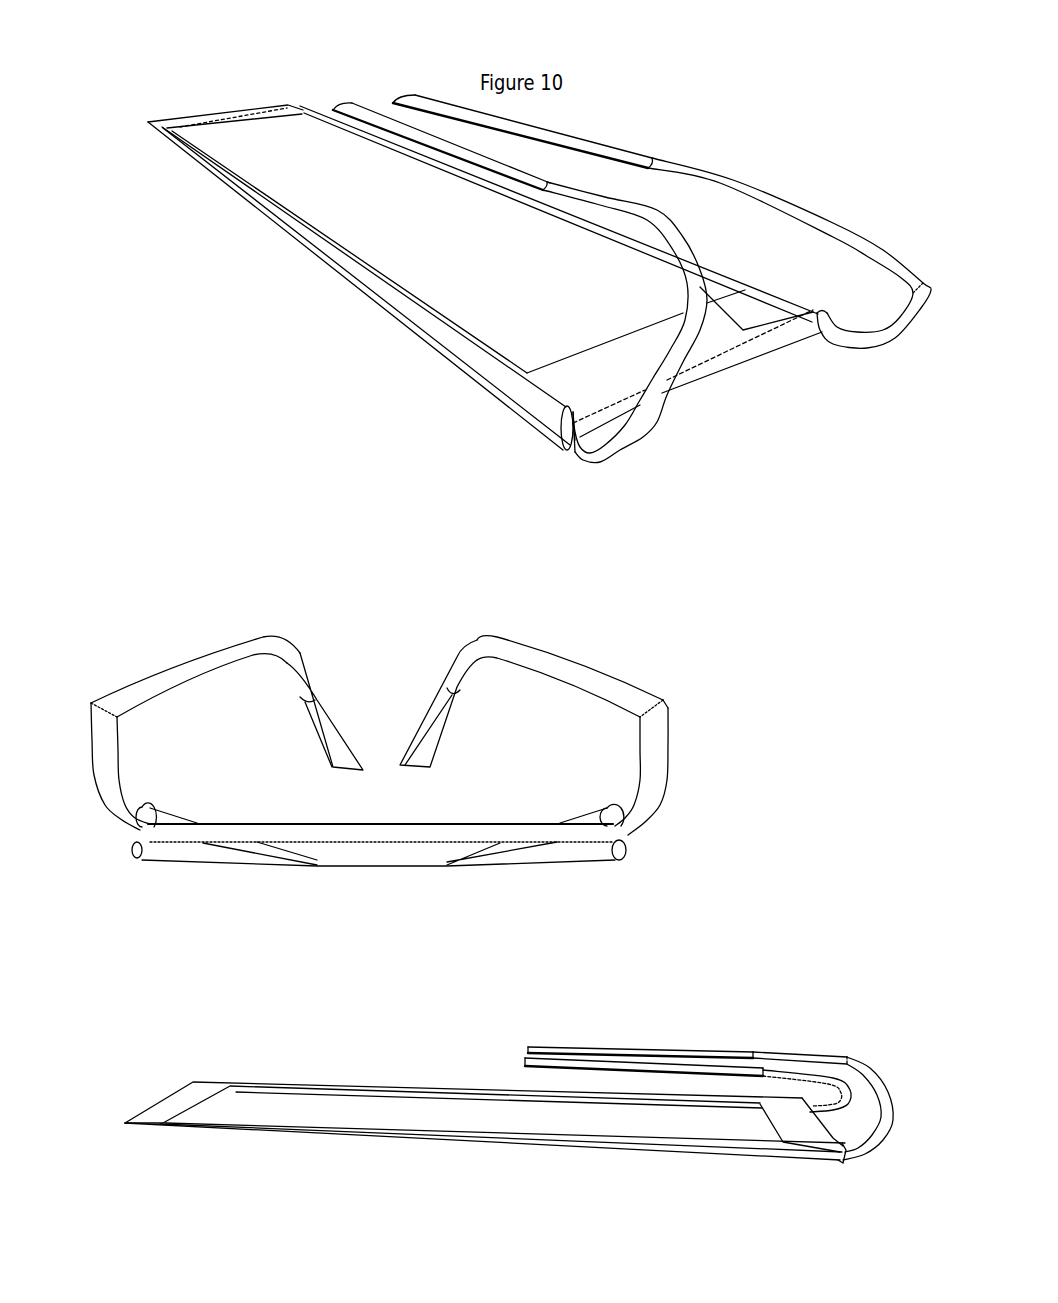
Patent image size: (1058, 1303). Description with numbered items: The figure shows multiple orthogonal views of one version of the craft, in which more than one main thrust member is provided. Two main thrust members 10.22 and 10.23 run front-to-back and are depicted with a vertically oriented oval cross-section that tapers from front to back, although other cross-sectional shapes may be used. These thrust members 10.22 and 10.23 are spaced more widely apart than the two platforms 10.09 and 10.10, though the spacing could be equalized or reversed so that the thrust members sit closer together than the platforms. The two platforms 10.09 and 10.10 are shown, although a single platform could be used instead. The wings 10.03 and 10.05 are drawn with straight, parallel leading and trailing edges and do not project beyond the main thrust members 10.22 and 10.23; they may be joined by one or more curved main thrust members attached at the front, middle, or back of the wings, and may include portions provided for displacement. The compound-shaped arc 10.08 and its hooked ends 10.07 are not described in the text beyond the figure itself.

The wing 10.03 is at (237, 115).
The wing 10.05 is at (707, 375).
The hook 10.07 is at (652, 433).
The frame tube 10.08 is at (720, 183).
The platform 10.09 is at (367, 110).
The platform 10.10 is at (558, 137).
The main thrust member 10.22 is at (387, 308).
The main thrust member 10.23 is at (718, 277).